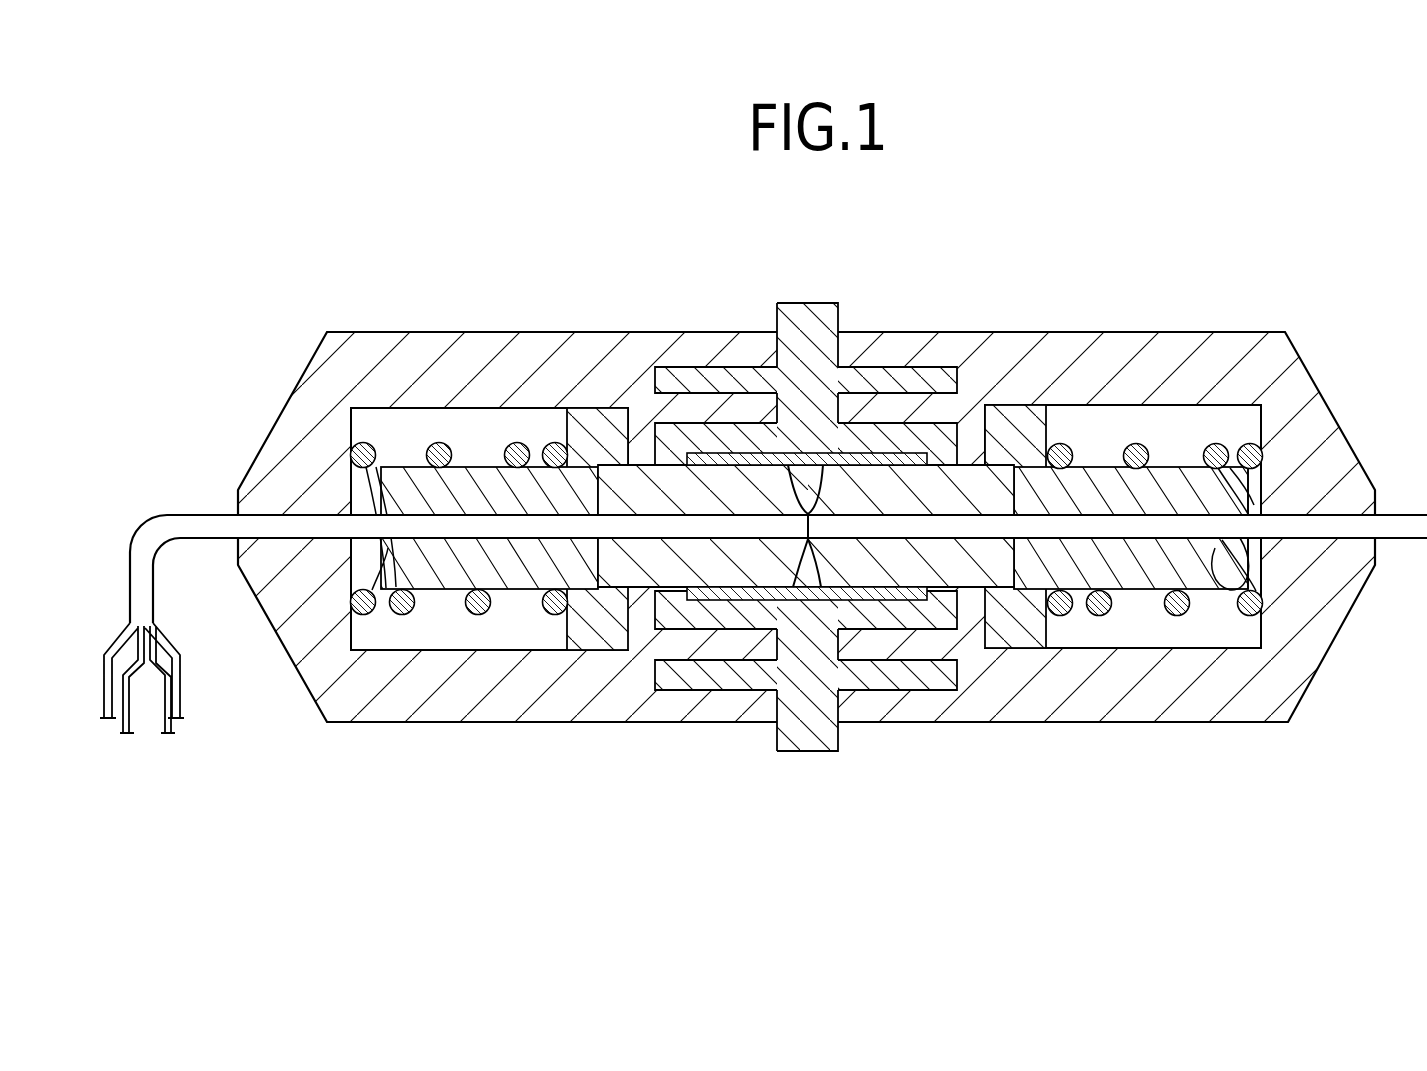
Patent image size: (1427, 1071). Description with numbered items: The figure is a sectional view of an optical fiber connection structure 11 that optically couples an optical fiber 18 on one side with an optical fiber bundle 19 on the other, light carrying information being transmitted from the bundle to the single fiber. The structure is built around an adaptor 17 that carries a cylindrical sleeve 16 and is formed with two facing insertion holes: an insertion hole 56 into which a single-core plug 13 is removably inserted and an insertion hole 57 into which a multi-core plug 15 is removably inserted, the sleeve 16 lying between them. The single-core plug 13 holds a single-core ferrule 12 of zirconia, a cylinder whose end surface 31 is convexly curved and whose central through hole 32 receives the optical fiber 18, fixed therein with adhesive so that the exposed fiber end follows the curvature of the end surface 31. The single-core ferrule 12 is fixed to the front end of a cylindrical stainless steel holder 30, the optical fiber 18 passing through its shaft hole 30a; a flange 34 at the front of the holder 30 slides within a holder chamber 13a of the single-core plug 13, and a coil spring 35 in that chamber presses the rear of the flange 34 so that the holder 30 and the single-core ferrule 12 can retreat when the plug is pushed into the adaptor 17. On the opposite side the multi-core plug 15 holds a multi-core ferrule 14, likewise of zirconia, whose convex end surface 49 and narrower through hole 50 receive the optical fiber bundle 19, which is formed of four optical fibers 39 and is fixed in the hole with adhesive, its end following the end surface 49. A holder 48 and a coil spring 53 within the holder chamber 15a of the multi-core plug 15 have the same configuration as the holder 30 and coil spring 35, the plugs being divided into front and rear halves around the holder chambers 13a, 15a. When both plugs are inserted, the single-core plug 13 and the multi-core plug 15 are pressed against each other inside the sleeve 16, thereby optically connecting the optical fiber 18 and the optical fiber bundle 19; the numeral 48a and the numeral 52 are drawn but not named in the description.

The optical fiber connection structure 11 is at (1340, 696).
The single-core ferrule 12 is at (977, 592).
The single-core plug 13 is at (1070, 735).
The holder chamber 13a is at (1123, 432).
The multi-core ferrule 14 is at (638, 592).
The multi-core plug 15 is at (571, 732).
The holder chamber 15a is at (436, 432).
The cylindrical sleeve 16 is at (860, 603).
The adaptor 17 is at (804, 763).
The optical fiber 18 is at (1399, 541).
The optical fiber bundle 19 is at (178, 541).
The holder 30 is at (1138, 592).
The shaft hole 30a is at (1238, 532).
The end surface 31 is at (808, 600).
The through hole 32 is at (873, 541).
The flange 34 is at (1010, 652).
The coil spring 35 is at (1098, 616).
The optical fiber 39 is at (183, 690).
The holder 48 is at (447, 592).
The first piston bore 48a is at (468, 527).
The end surface 49 is at (810, 466).
The through hole 50 is at (740, 541).
The first partition wall 52 is at (591, 425).
The coil spring 53 is at (482, 614).
The insertion hole 56 is at (975, 462).
The insertion hole 57 is at (646, 455).